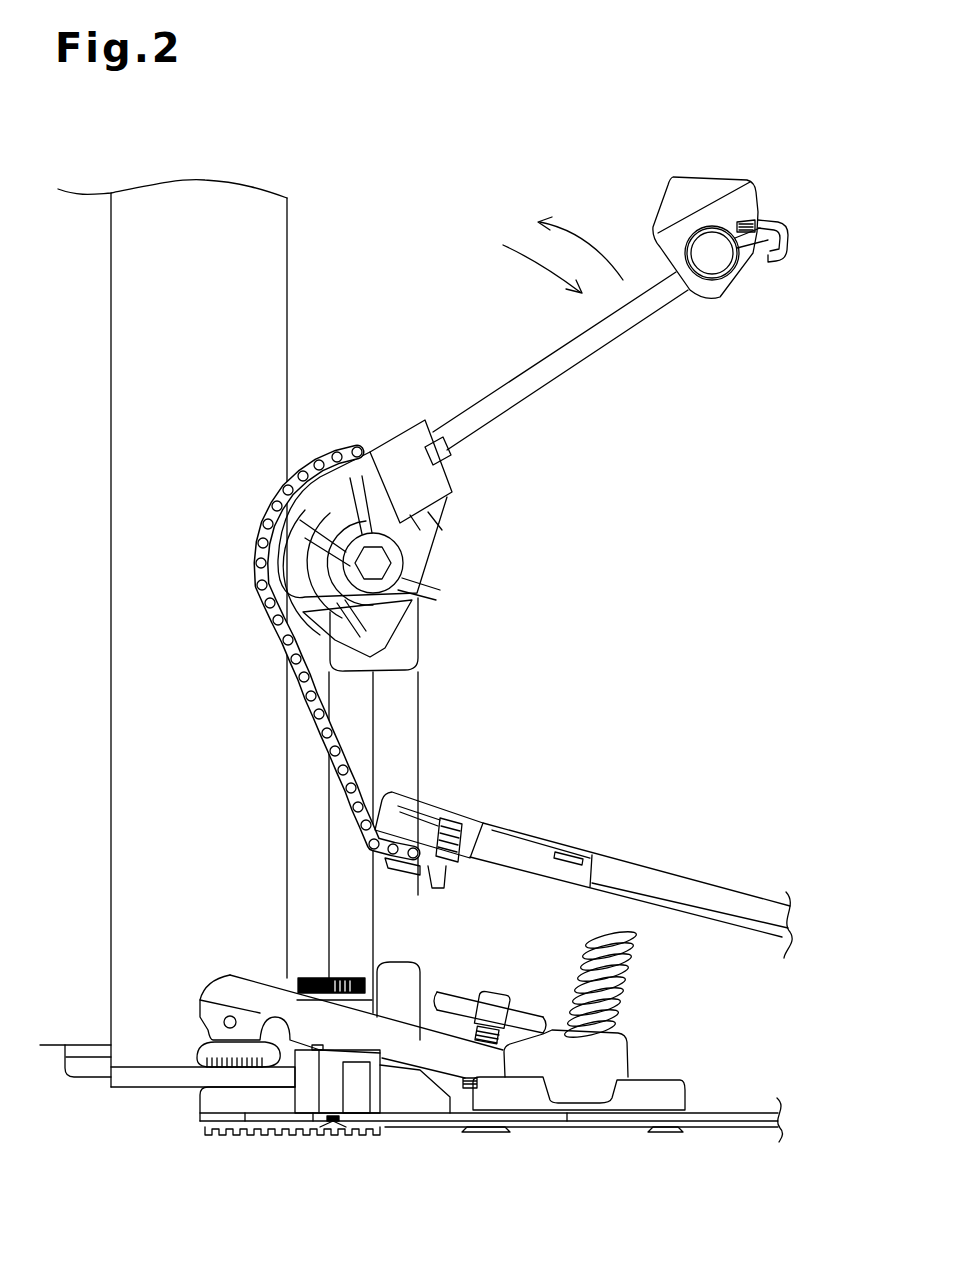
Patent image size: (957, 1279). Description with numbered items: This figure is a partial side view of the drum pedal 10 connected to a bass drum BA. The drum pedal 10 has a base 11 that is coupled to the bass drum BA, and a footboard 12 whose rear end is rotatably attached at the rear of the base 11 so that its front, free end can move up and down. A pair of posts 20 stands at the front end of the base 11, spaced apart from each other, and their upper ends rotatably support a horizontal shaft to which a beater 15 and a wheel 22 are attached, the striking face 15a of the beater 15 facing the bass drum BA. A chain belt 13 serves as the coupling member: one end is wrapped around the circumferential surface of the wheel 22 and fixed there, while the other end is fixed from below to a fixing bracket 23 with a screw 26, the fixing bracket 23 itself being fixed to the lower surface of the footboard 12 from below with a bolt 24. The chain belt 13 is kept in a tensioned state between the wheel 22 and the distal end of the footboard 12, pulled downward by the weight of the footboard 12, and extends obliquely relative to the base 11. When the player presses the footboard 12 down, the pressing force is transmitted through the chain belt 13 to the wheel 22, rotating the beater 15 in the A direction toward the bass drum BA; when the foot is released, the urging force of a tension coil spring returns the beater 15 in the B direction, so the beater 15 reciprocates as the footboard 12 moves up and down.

The bass drum BA is at (290, 198).
The drum pedal 10 is at (448, 186).
The base 11 is at (592, 1132).
The footboard 12 is at (637, 860).
The chain belt 13 is at (287, 660).
The beater 15 is at (718, 218).
The striking face 15a is at (680, 177).
The posts 20 is at (418, 724).
The wheel 22 is at (290, 505).
The fixing bracket 23 is at (468, 871).
The bolt 24 is at (434, 889).
The screw 26 is at (402, 866).